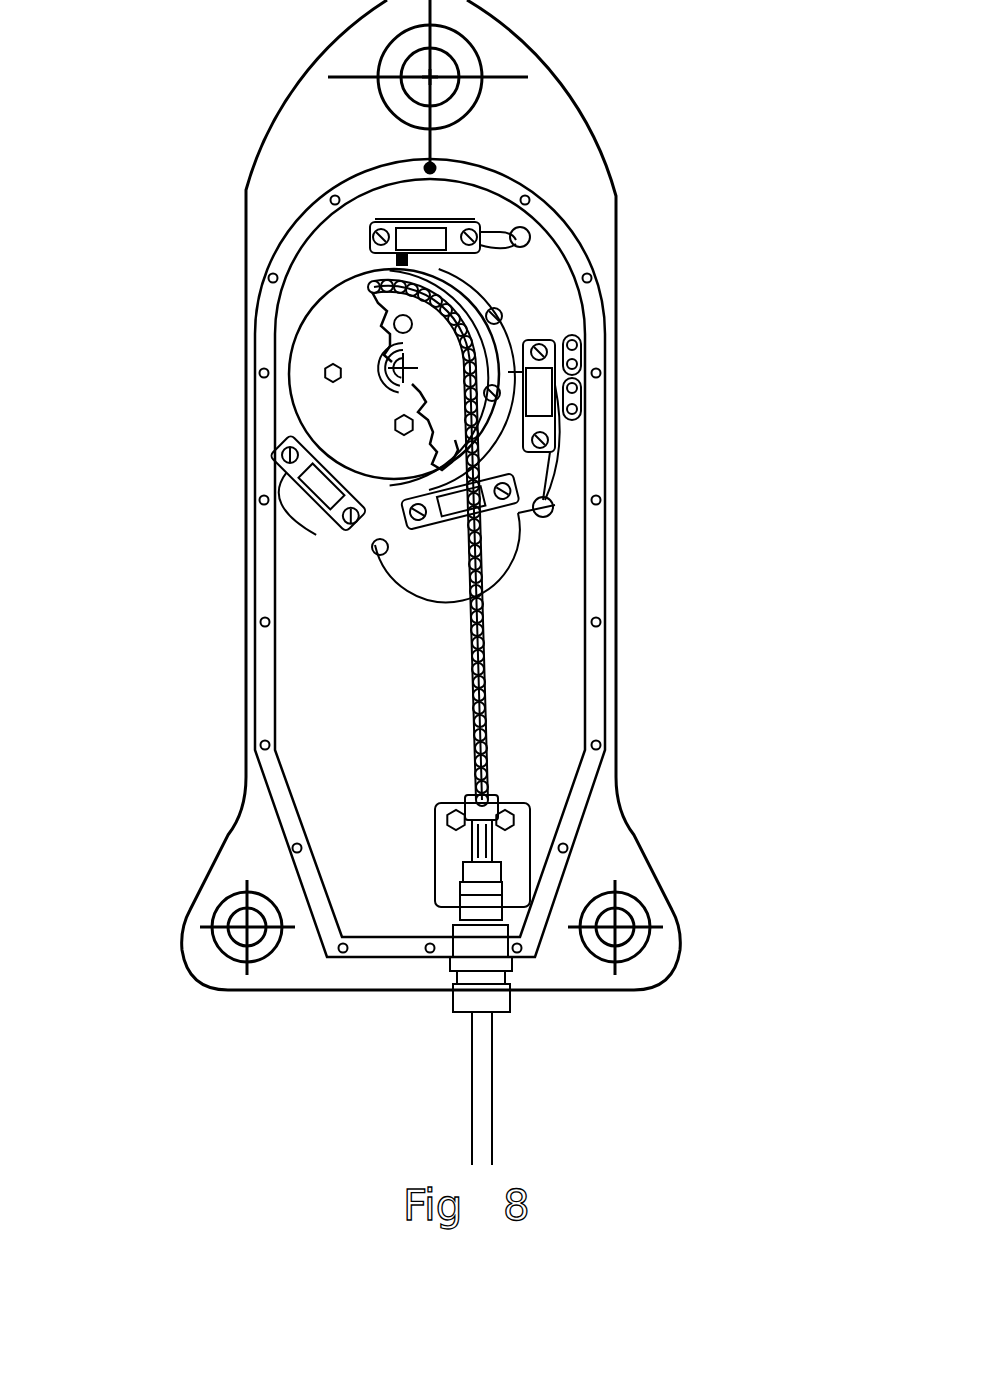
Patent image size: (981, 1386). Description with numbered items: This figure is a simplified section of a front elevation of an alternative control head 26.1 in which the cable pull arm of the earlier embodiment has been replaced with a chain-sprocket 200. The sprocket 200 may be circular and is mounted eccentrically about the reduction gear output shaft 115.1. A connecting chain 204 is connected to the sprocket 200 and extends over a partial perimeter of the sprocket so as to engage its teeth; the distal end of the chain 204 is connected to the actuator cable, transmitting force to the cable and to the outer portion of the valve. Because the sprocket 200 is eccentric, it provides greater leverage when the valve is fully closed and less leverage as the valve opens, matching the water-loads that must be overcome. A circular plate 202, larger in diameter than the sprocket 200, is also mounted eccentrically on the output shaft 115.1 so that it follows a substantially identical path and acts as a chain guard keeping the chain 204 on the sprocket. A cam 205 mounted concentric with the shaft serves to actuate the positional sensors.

The alternative control head 26.1 is at (524, 495).
The chain-sprocket 200 is at (437, 340).
The circular plate 202 is at (277, 343).
The connecting chain 204 is at (553, 543).
The cam 205 is at (560, 361).
The reduction gear output shaft 115.1 is at (398, 369).